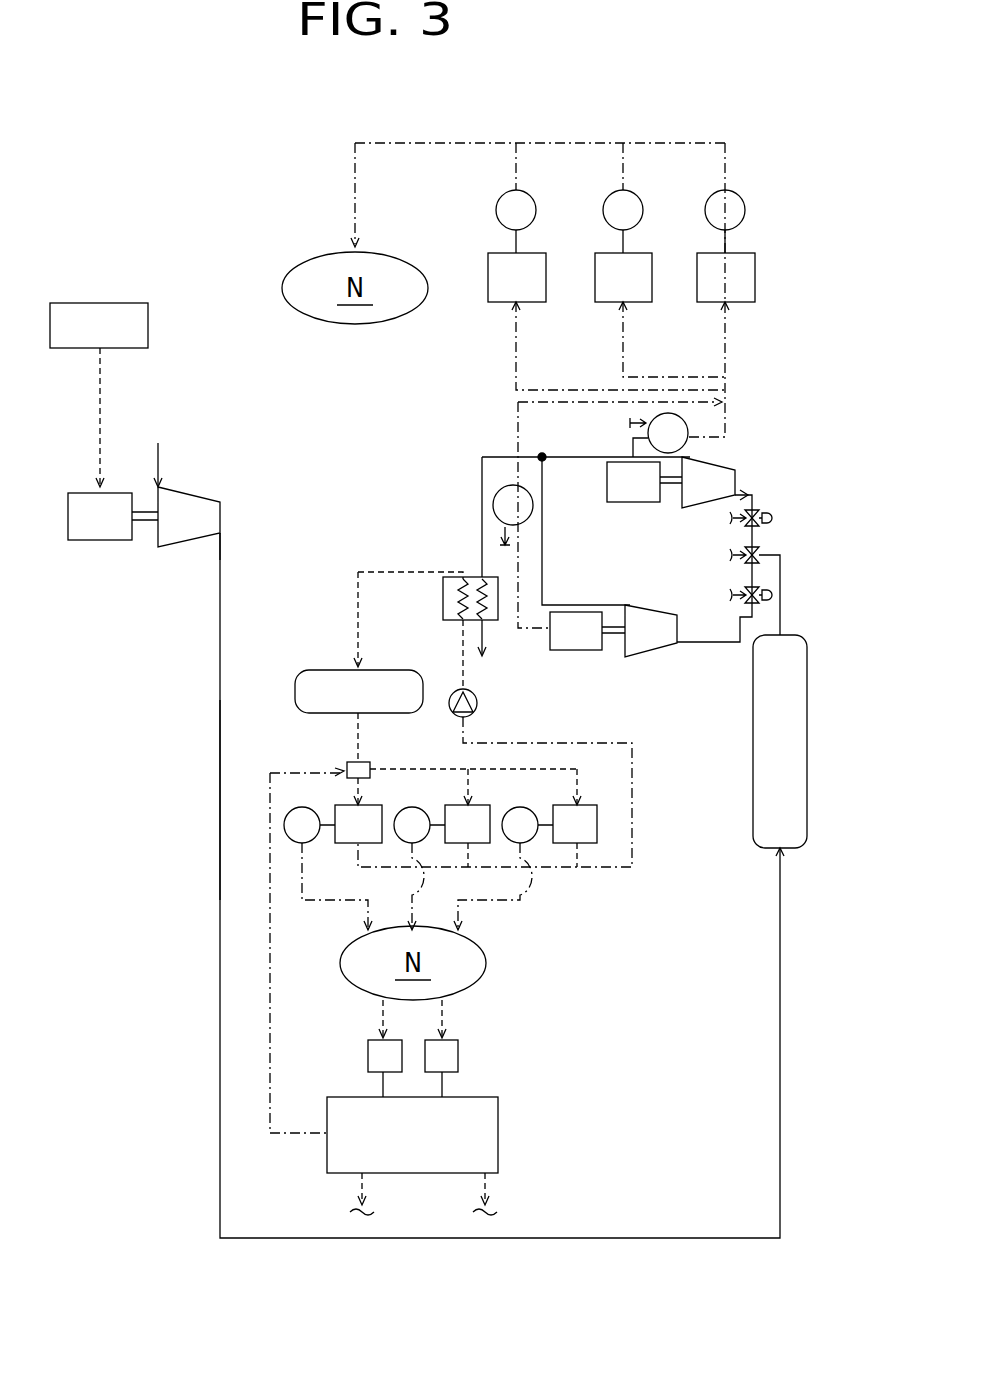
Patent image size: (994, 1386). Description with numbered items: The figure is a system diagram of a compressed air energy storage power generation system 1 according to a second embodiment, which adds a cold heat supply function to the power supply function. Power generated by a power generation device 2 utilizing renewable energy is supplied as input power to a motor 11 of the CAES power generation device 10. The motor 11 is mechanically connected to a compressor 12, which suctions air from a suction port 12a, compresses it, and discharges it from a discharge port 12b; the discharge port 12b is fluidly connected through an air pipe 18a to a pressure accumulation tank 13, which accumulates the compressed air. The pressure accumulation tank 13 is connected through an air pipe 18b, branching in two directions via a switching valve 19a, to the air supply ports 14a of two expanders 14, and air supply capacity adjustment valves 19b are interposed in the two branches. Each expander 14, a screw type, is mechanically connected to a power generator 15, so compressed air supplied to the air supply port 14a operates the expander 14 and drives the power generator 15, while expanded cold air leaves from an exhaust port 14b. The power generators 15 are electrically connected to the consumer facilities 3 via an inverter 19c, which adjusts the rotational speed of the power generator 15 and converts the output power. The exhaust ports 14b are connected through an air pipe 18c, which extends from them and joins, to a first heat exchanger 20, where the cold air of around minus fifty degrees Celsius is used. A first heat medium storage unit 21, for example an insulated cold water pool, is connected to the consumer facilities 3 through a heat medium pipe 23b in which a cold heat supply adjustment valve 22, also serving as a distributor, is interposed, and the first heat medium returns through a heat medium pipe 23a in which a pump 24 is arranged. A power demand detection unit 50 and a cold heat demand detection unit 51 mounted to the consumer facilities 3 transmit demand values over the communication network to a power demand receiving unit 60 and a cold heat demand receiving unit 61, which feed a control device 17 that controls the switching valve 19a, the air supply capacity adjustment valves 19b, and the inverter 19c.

The compressed air energy storage power generation system 1 is at (122, 164).
The power generation device 2 is at (92, 303).
The consumer facility 3 is at (710, 308).
The CAES power generation device 10 is at (186, 963).
The motor 11 is at (92, 540).
The compressor 12 is at (218, 516).
The suction port 12a is at (163, 485).
The discharge port 12b is at (220, 533).
The pressure accumulation tank 13 is at (753, 706).
The expander 14 is at (740, 480).
The air supply port 14a is at (737, 496).
The exhaust port 14b is at (690, 458).
The power generator 15 is at (607, 484).
The control device 17 is at (498, 1130).
The air pipe 18a is at (220, 813).
The air pipe 18b is at (740, 550).
The air pipe 18c is at (494, 500).
The switching valve 19a is at (765, 556).
The air supply capacity adjustment valve 19b is at (770, 518).
The inverter 19c is at (655, 418).
The first heat exchanger 20 is at (443, 614).
The first heat medium storage unit 21 is at (298, 678).
The cold heat supply adjustment valve 22 is at (344, 766).
The heat medium pipe 23a is at (532, 743).
The heat medium pipe 23b is at (360, 744).
The pump 24 is at (473, 693).
The power demand detection unit 50 is at (496, 212).
The cold heat demand detection unit 51 is at (292, 808).
The power demand receiving unit 60 is at (458, 1055).
The cold heat demand receiving unit 61 is at (368, 1055).